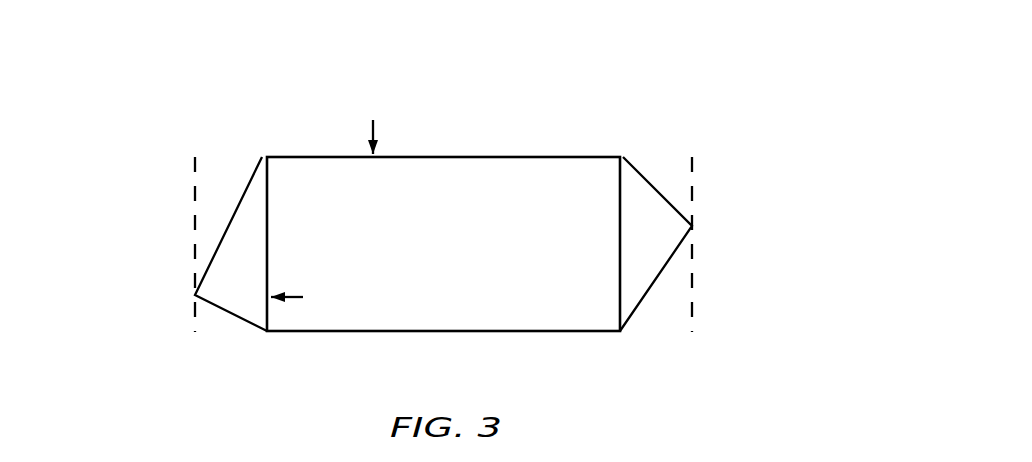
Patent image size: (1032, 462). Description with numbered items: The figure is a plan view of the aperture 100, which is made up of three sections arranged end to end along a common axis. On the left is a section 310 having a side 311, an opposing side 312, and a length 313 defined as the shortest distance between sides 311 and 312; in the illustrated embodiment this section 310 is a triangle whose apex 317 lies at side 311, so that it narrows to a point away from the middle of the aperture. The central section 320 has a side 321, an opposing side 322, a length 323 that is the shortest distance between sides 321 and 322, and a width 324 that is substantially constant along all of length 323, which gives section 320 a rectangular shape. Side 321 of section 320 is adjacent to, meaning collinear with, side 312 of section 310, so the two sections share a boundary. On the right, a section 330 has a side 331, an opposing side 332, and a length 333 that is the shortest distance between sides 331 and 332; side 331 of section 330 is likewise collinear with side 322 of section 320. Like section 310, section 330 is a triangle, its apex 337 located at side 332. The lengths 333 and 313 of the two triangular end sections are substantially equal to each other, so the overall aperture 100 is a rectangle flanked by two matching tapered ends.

The aperture 100 is at (795, 122).
The section 310 is at (240, 262).
The side 311 is at (190, 163).
The opposing side 312 is at (262, 188).
The length 313 is at (190, 295).
The apex 317 is at (203, 292).
The section 320 is at (595, 314).
The side 321 is at (273, 189).
The opposing side 322 is at (615, 190).
The length 323 is at (616, 250).
The width 324 is at (372, 334).
The section 330 is at (640, 253).
The side 331 is at (627, 190).
The opposing side 332 is at (699, 307).
The length 333 is at (616, 227).
The apex 337 is at (727, 225).